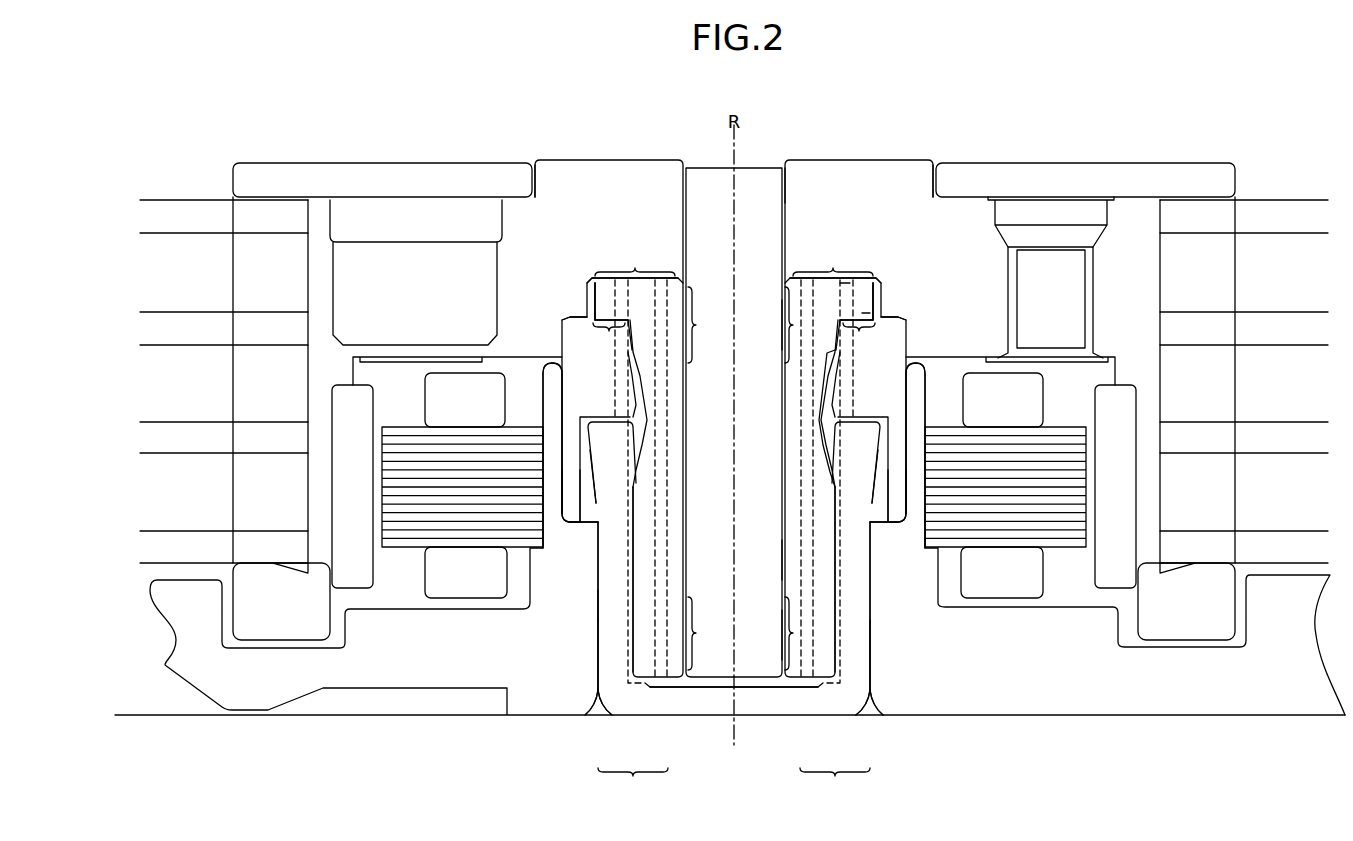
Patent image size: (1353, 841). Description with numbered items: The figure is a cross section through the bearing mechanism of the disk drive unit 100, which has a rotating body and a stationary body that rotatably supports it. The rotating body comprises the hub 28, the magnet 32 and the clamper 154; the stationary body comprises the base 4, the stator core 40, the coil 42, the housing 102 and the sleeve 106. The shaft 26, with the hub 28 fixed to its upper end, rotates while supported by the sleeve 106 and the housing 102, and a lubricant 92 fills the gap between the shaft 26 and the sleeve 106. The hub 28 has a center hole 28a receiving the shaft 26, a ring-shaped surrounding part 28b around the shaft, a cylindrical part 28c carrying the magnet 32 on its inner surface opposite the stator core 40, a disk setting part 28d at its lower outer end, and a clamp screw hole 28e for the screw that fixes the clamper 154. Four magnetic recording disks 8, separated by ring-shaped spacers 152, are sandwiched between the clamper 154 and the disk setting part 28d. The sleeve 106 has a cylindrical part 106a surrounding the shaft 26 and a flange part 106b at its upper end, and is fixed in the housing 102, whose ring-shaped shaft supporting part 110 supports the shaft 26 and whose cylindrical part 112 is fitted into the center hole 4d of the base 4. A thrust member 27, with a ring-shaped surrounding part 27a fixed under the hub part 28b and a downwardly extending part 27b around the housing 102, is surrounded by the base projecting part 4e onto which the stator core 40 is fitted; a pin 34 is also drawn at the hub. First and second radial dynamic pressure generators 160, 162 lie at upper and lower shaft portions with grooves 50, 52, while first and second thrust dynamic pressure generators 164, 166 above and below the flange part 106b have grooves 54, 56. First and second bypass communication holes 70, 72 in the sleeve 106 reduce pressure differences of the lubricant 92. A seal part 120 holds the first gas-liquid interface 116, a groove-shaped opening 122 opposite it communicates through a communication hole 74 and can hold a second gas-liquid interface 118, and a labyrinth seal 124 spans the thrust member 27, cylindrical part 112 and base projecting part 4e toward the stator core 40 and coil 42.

The disk drive unit 100 is at (170, 104).
The base 4 is at (190, 695).
The center hole 4d is at (597, 638).
The base projecting part 4e is at (550, 490).
The magnetic recording disk 8 is at (185, 210).
The spacer 152 is at (245, 270).
The clamper 154 is at (270, 170).
The shaft 26 is at (702, 180).
The hub 28 is at (608, 150).
The center hole 28a is at (787, 203).
The ring-shaped surrounding part 28b is at (558, 175).
The cylindrical part 28c is at (318, 487).
The disk setting part 28d is at (268, 620).
The clamp screw hole 28e is at (1070, 213).
The magnet 32 is at (355, 572).
The pin 34 is at (1027, 353).
The stator core 40 is at (415, 540).
The coil 42 is at (473, 587).
The first radial dynamic pressure generating groove 50 is at (783, 325).
The second radial dynamic pressure generating groove 52 is at (783, 632).
The first thrust dynamic pressure generating groove 54 is at (840, 284).
The second thrust dynamic pressure generating groove 56 is at (862, 313).
The first bypass communication hole 70 is at (607, 290).
The second bypass communication hole 72 is at (667, 422).
The communication hole 74 is at (623, 607).
The thrust member 27 is at (550, 342).
The ring-shaped surrounding part 27a is at (568, 328).
The downwardly extending part 27b is at (572, 505).
The lubricant 92 is at (833, 365).
The housing 102 is at (734, 784).
The sleeve 106 is at (790, 695).
The cylindrical part 106a is at (668, 533).
The flange part 106b is at (596, 302).
The shaft supporting part 110 is at (657, 693).
The cylindrical part 112 is at (617, 660).
The first gas-liquid interface 116 is at (633, 375).
The second gas-liquid interface 118 is at (633, 456).
The seal part 120 is at (636, 398).
The groove-shaped opening 122 is at (630, 432).
The labyrinth seal 124 is at (593, 508).
The first radial dynamic pressure generator 160 is at (759, 325).
The second radial dynamic pressure generator 162 is at (758, 633).
The first thrust dynamic pressure generator 164 is at (734, 260).
The second thrust dynamic pressure generator 166 is at (734, 337).